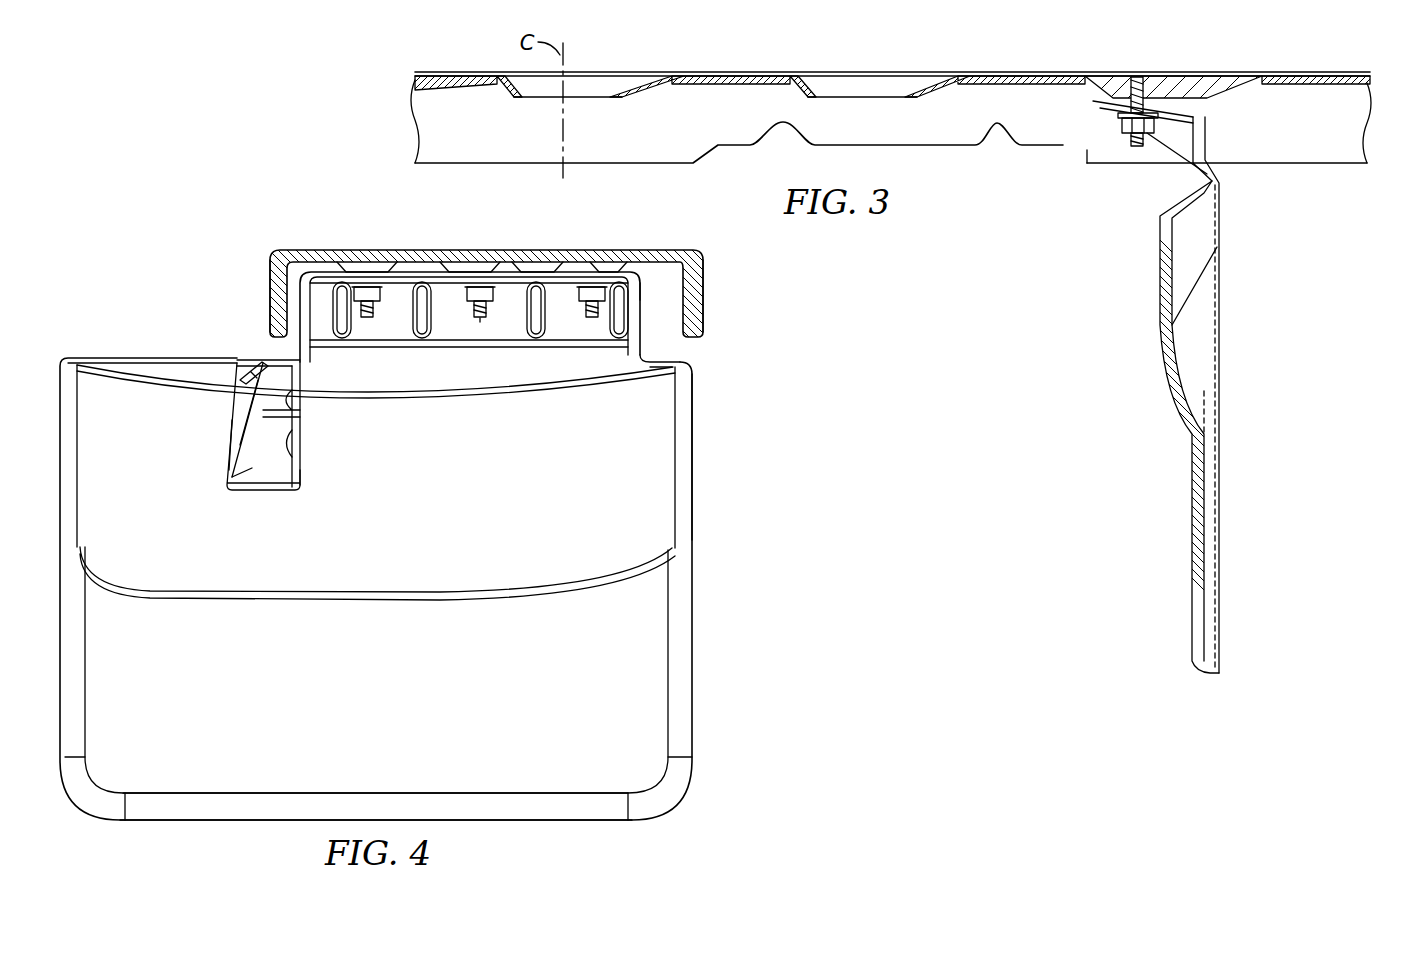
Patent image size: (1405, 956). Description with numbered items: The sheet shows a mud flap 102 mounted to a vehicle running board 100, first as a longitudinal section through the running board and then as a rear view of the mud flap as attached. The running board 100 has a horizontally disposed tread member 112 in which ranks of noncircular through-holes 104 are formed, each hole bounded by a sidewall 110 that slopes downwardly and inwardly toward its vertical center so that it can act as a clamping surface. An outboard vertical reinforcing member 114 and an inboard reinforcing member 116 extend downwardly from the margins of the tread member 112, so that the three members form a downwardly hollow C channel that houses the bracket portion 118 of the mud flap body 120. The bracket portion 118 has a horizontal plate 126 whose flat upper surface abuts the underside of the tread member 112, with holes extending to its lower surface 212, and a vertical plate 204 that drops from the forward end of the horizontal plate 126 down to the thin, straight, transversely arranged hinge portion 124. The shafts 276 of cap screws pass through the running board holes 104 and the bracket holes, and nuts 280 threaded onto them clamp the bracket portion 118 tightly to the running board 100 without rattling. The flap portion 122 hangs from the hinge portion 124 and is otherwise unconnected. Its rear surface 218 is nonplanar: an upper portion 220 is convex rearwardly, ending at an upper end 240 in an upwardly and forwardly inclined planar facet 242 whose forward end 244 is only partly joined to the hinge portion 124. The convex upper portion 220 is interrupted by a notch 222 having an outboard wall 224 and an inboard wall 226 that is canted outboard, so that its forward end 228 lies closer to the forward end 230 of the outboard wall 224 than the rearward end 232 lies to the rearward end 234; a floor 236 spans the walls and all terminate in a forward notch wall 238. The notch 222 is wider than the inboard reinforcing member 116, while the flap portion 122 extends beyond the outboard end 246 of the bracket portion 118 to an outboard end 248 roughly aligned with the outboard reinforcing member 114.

In FIG. 3, the running board 100 is at (1031, 66).
In FIG. 4, the running board 100 is at (262, 263).
In FIG. 3, the mud flap 102 is at (1205, 401).
In FIG. 4, the mud flap 102 is at (419, 586).
In FIG. 3, the through-holes 104 is at (863, 83).
In FIG. 3, the sidewall 110 is at (617, 82).
In FIG. 3, the tread member 112 is at (1318, 73).
In FIG. 4, the tread member 112 is at (422, 250).
In FIG. 4, the outboard vertical reinforcing member 114 is at (706, 288).
In FIG. 3, the inboard reinforcing member 116 is at (1342, 152).
In FIG. 4, the inboard reinforcing member 116 is at (270, 297).
In FIG. 3, the bracket portion 118 is at (1117, 103).
In FIG. 4, the bracket portion 118 is at (320, 267).
In FIG. 3, the mud flap body 120 is at (1180, 411).
In FIG. 4, the mud flap body 120 is at (677, 708).
In FIG. 4, the flap portion 122 is at (177, 777).
In FIG. 3, the hinge portion 124 is at (1220, 183).
In FIG. 4, the hinge portion 124 is at (642, 345).
In FIG. 4, the horizontal plate 126 is at (538, 272).
In FIG. 3, the vertical plate 204 is at (1208, 128).
In FIG. 3, the lower surface 212 is at (1127, 107).
In FIG. 4, the rear surface 218 is at (375, 726).
In FIG. 4, the upper portion 220 is at (377, 555).
In FIG. 4, the notch 222 is at (263, 477).
In FIG. 4, the outboard wall 224 is at (300, 455).
In FIG. 4, the inboard wall 226 is at (232, 418).
In FIG. 4, the forward end 228 is at (238, 382).
In FIG. 4, the forward end 230 is at (302, 423).
In FIG. 4, the rearward end 232 is at (228, 447).
In FIG. 4, the rearward end 234 is at (303, 472).
In FIG. 4, the floor 236 is at (250, 468).
In FIG. 4, the forward notch wall 238 is at (277, 360).
In FIG. 4, the upper end 240 is at (527, 387).
In FIG. 4, the planar facet 242 is at (545, 372).
In FIG. 4, the forward end 244 is at (105, 357).
In FIG. 4, the outboard end 246 is at (640, 310).
In FIG. 4, the outboard end 248 is at (693, 470).
In FIG. 4, the shafts 276 is at (483, 330).
In FIG. 4, the nuts 280 is at (450, 300).